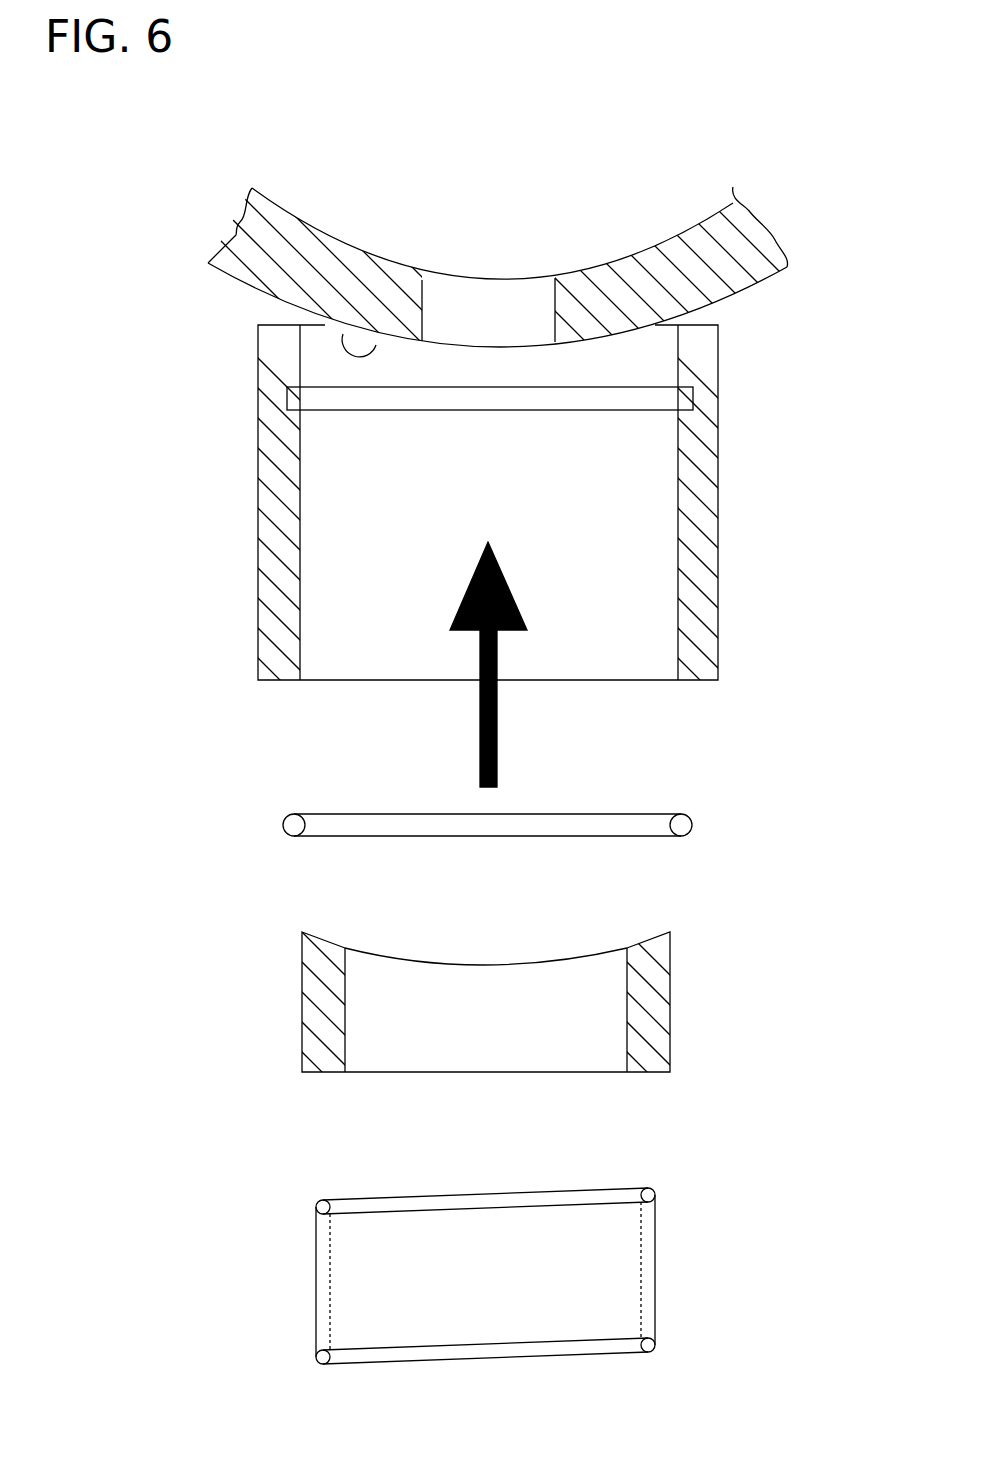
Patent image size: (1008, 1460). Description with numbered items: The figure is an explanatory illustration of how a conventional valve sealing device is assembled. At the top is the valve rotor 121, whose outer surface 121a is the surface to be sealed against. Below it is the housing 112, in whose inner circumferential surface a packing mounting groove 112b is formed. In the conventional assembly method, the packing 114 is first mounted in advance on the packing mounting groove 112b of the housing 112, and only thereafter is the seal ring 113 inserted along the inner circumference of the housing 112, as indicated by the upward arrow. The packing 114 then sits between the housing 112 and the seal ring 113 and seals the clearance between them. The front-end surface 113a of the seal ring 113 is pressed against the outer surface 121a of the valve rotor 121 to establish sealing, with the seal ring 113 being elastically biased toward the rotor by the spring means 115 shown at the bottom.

The valve rotor 121 is at (235, 233).
The outer surface of valve rotor 121a is at (378, 335).
The housing 112 is at (700, 488).
The packing mounting groove 112b is at (295, 398).
The packing 114 is at (692, 825).
The seal ring 113 is at (650, 1005).
The front-end surface of seal ring 113a is at (337, 944).
The spring means 115 is at (648, 1266).